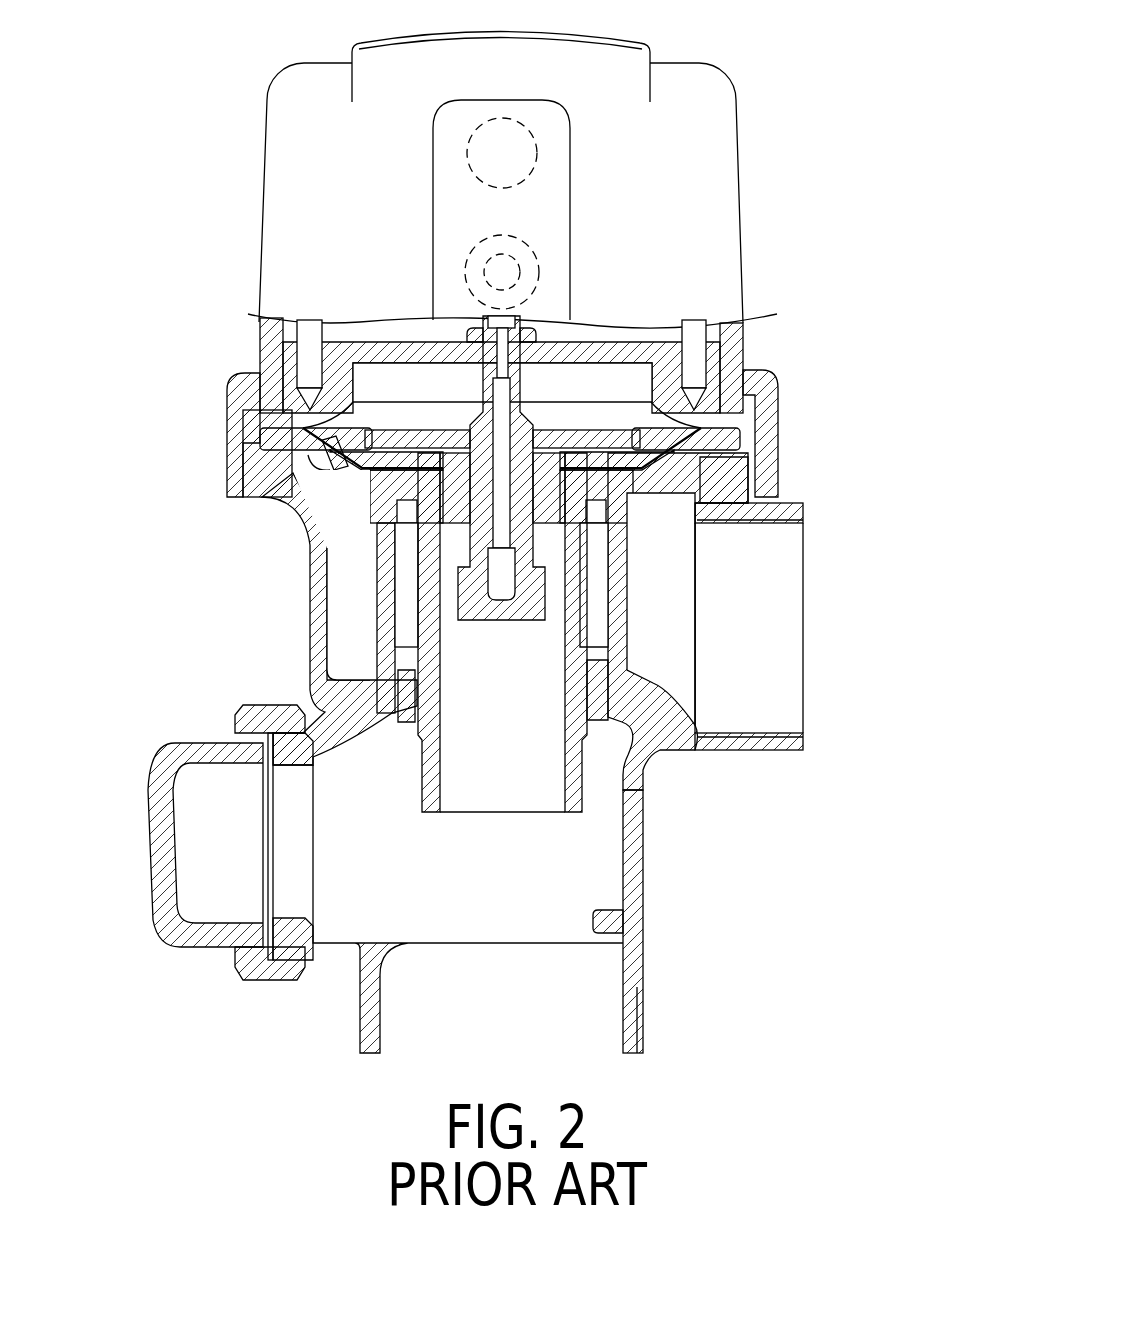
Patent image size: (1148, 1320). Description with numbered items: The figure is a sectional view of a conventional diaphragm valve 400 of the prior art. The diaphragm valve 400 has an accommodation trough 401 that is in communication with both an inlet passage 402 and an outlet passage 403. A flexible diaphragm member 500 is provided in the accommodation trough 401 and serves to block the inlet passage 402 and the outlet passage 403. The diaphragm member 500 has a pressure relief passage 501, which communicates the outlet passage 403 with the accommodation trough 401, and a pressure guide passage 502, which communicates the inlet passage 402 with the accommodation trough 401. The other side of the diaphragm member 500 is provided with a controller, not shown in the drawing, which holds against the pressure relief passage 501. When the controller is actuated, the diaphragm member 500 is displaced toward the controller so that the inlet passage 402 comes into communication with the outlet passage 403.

The diaphragm valve 400 is at (310, 605).
The accommodation trough 401 is at (598, 613).
The inlet passage 402 is at (772, 743).
The outlet passage 403 is at (633, 957).
The diaphragm member 500 is at (728, 452).
The pressure relief passage 501 is at (500, 593).
The pressure guide passage 502 is at (292, 508).